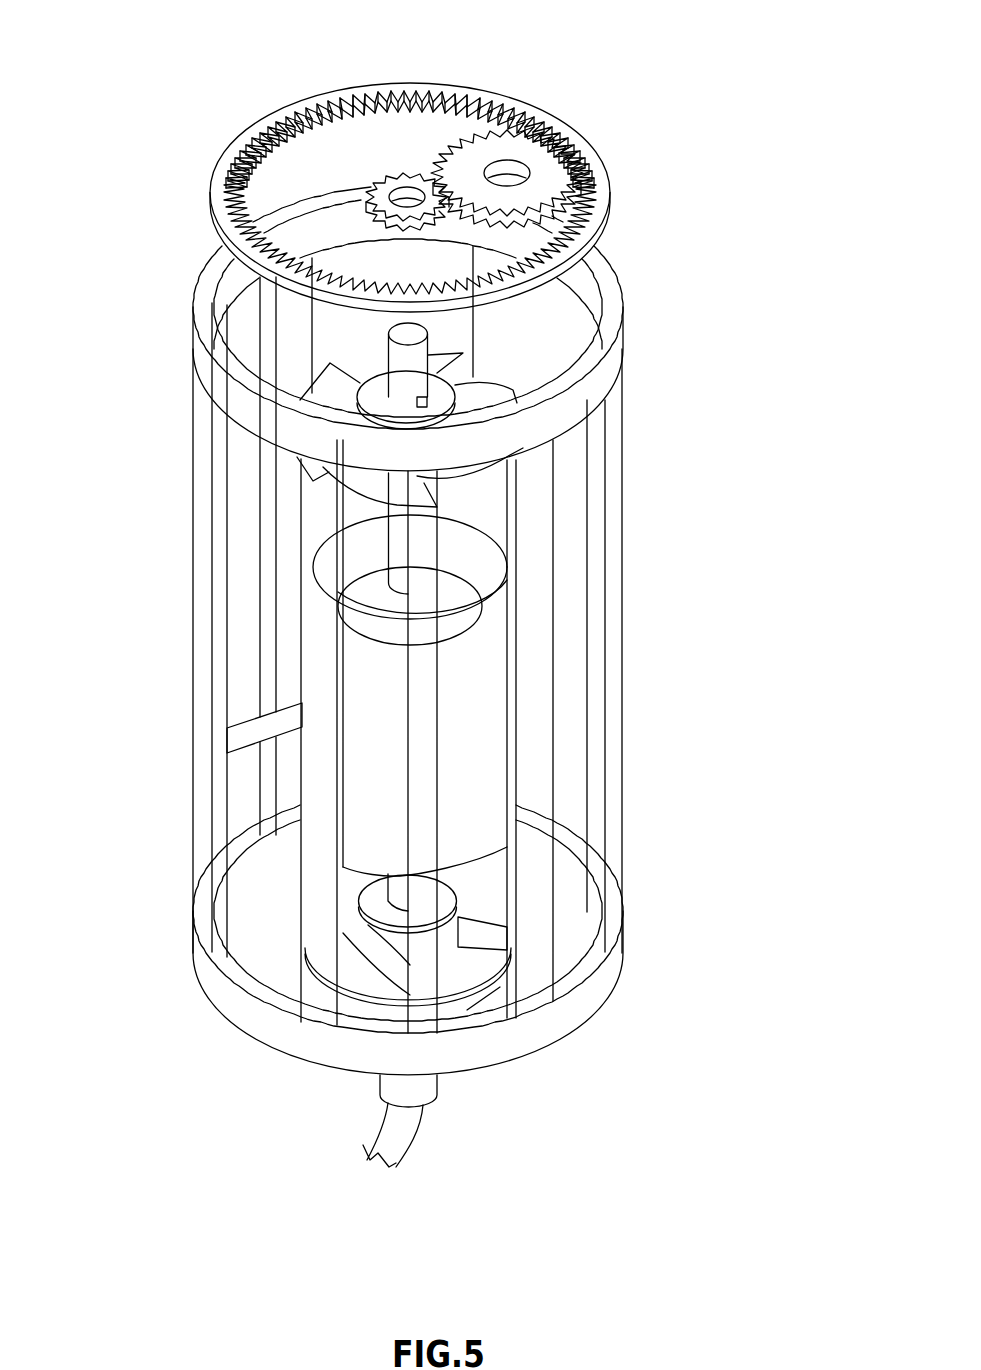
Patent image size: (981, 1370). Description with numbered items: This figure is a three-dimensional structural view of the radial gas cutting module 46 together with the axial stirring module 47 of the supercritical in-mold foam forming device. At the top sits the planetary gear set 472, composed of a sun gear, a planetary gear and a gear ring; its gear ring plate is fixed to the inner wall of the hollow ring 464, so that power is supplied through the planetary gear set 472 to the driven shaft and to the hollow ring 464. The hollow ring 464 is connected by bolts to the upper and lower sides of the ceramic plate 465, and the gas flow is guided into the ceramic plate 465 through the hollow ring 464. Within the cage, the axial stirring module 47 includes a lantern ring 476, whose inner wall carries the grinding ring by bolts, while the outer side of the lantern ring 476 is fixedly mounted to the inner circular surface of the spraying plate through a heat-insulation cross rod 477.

The axial stirring module 47 is at (215, 200).
The planetary gear set 472 is at (468, 163).
The hollow ring 464 is at (620, 343).
The ceramic plate 465 is at (537, 730).
The heat-insulation cross rod 477 is at (263, 729).
The lantern ring 476 is at (373, 783).
The radial gas cutting module 46 is at (422, 1094).